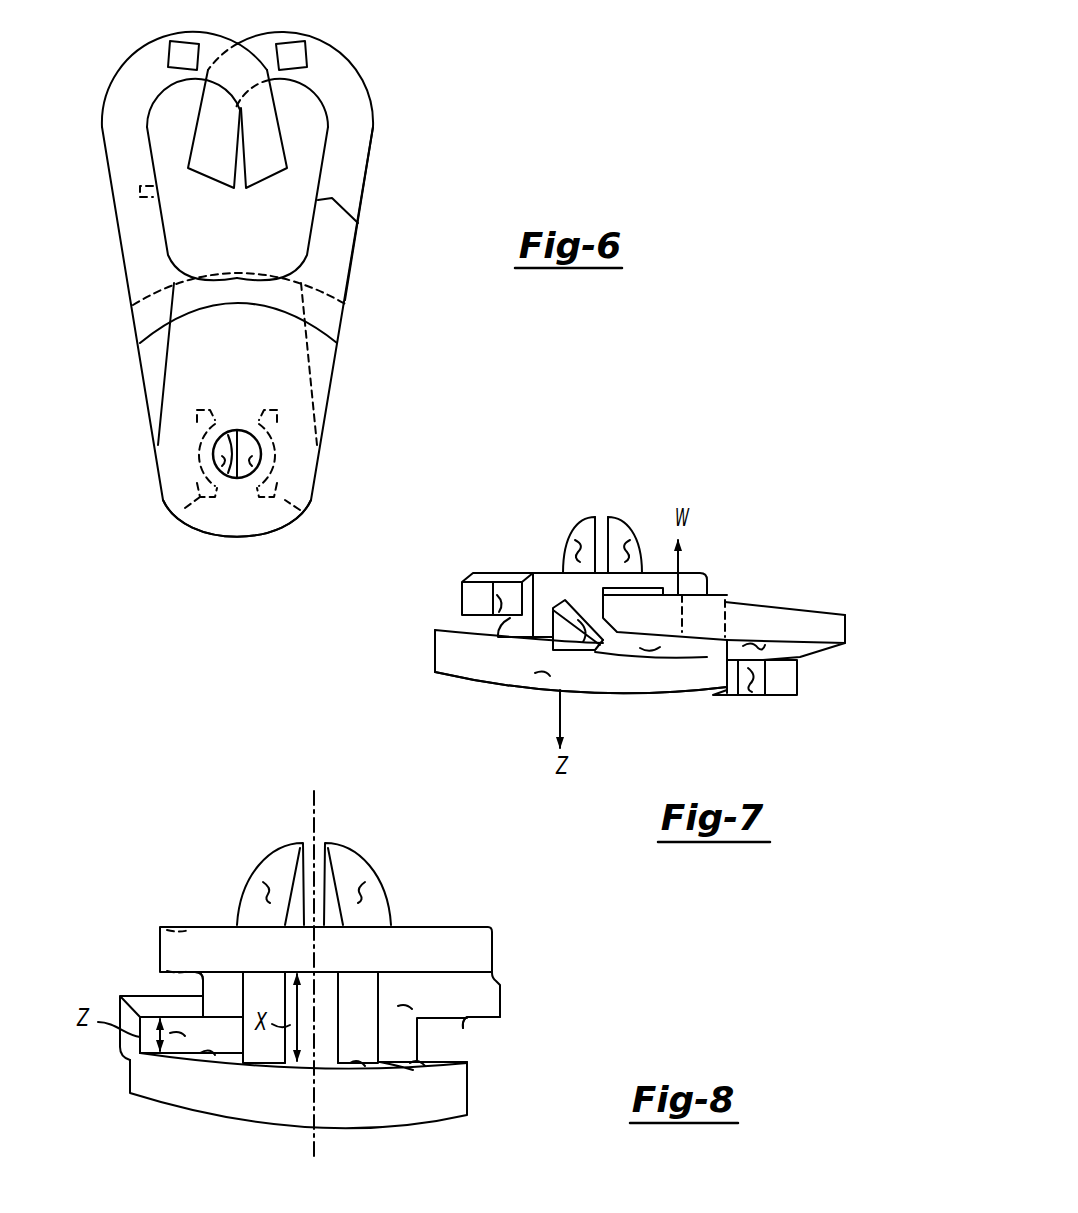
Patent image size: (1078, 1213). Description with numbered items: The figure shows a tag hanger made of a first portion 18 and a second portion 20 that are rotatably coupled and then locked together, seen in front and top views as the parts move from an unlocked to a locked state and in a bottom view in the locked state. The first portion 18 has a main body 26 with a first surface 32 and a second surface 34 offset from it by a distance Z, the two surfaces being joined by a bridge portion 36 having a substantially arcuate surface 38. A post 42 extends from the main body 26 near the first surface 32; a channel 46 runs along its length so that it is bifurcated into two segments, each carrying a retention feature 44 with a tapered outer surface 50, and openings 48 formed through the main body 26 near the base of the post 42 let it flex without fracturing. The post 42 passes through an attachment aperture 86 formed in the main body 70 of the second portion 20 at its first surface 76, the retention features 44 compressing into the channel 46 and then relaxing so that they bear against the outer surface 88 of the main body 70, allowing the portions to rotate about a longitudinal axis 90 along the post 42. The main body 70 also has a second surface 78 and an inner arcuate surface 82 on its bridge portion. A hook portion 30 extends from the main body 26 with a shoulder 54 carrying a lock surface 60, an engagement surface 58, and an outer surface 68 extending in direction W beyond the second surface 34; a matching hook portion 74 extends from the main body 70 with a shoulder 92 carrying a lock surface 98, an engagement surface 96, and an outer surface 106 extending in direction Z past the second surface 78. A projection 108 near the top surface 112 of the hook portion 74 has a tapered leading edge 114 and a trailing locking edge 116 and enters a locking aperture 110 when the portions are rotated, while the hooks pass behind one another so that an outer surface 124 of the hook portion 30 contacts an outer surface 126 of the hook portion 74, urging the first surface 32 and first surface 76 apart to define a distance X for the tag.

In FIG. 6, the first portion 18 is at (118, 77).
In FIG. 7, the first portion 18 is at (851, 631).
In FIG. 6, the second portion 20 is at (368, 72).
In FIG. 7, the second portion 20 is at (434, 648).
In FIG. 8, the main body 26 is at (210, 1102).
In FIG. 6, the hook portion 30 is at (101, 128).
In FIG. 7, the hook portion 30 is at (850, 621).
In FIG. 8, the first surface 32 is at (427, 1063).
In FIG. 8, the second surface 34 is at (198, 990).
In FIG. 8, the bridge portion 36 is at (412, 1047).
In FIG. 8, the substantially arcuate surface 38 is at (178, 1038).
In FIG. 8, the post 42 is at (262, 988).
In FIG. 6, the retention feature 44 is at (222, 452).
In FIG. 7, the retention feature 44 is at (590, 515).
In FIG. 8, the retention feature 44 is at (280, 870).
In FIG. 7, the channel 46 is at (602, 523).
In FIG. 8, the channel 46 is at (328, 1068).
In FIG. 6, the openings 48 is at (185, 508).
In FIG. 8, the openings 48 is at (205, 1052).
In FIG. 6, the tapered outer surface 50 is at (228, 462).
In FIG. 7, the tapered outer surface 50 is at (578, 548).
In FIG. 8, the tapered outer surface 50 is at (268, 896).
In FIG. 6, the shoulder 54 is at (147, 262).
In FIG. 7, the shoulder 54 is at (785, 680).
In FIG. 6, the engagement surface 58 is at (269, 180).
In FIG. 6, the lock surface 60 is at (140, 195).
In FIG. 7, the lock surface 60 is at (755, 672).
In FIG. 7, the outer surface 68 is at (637, 590).
In FIG. 8, the main body 70 is at (472, 936).
In FIG. 6, the hook portion 74 is at (380, 152).
In FIG. 7, the hook portion 74 is at (466, 678).
In FIG. 8, the first surface 76 is at (165, 972).
In FIG. 8, the second surface 78 is at (465, 1027).
In FIG. 8, the inner arcuate surface 82 is at (410, 1008).
In FIG. 6, the attachment aperture 86 is at (228, 440).
In FIG. 6, the outer surface 88 is at (225, 515).
In FIG. 8, the outer surface 88 is at (172, 930).
In FIG. 8, the longitudinal axis 90 is at (311, 810).
In FIG. 6, the shoulder 92 is at (330, 258).
In FIG. 7, the shoulder 92 is at (473, 596).
In FIG. 6, the engagement surface 96 is at (205, 180).
In FIG. 6, the lock surface 98 is at (332, 198).
In FIG. 7, the lock surface 98 is at (497, 595).
In FIG. 7, the outer surface 106 is at (665, 690).
In FIG. 6, the projection 108 is at (296, 57).
In FIG. 7, the projection 108 is at (545, 632).
In FIG. 6, the locking aperture 110 is at (178, 57).
In FIG. 7, the locking aperture 110 is at (708, 617).
In FIG. 7, the top surface 112 is at (537, 673).
In FIG. 7, the tapered leading edge 114 is at (583, 648).
In FIG. 7, the trailing locking edge 116 is at (550, 632).
In FIG. 7, the outer surface 124 is at (762, 657).
In FIG. 7, the outer surface 126 is at (652, 648).